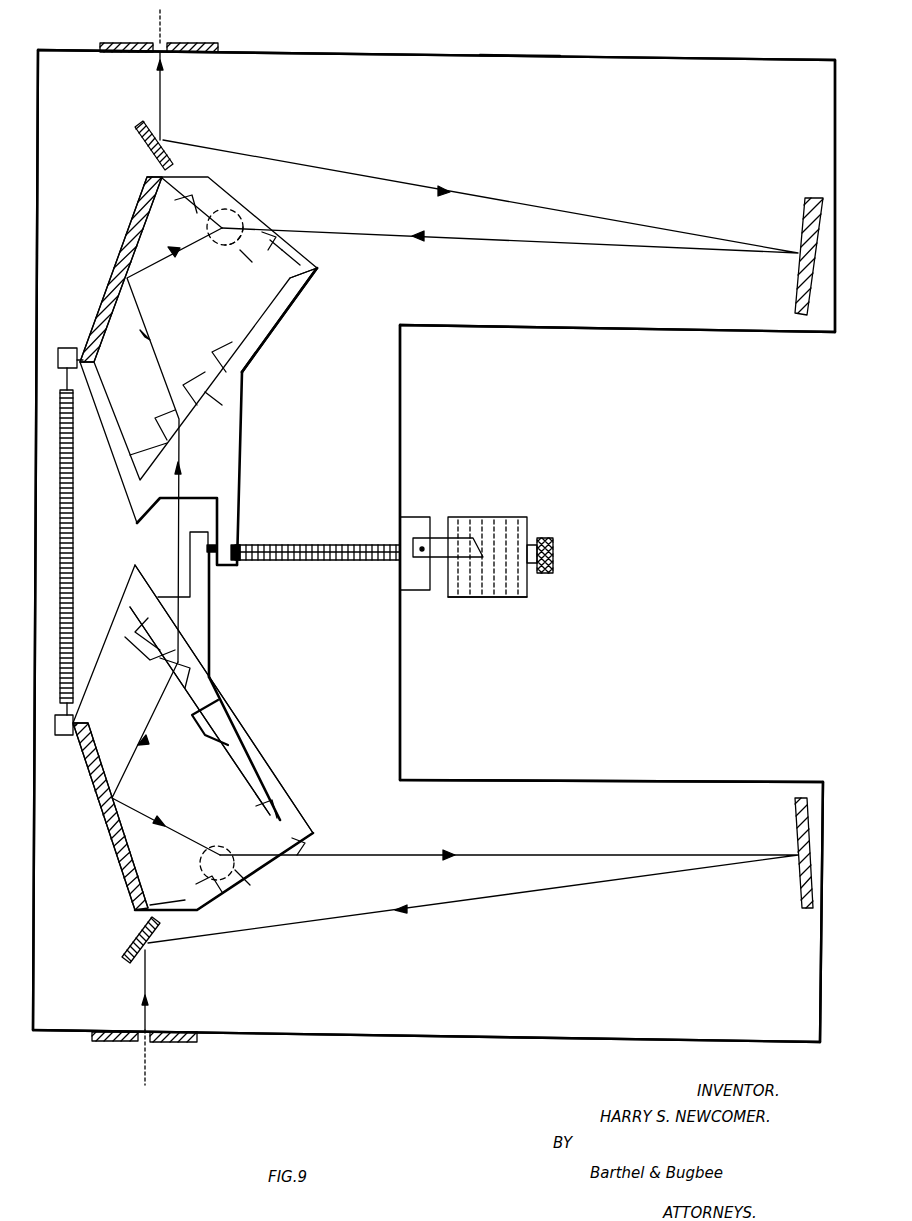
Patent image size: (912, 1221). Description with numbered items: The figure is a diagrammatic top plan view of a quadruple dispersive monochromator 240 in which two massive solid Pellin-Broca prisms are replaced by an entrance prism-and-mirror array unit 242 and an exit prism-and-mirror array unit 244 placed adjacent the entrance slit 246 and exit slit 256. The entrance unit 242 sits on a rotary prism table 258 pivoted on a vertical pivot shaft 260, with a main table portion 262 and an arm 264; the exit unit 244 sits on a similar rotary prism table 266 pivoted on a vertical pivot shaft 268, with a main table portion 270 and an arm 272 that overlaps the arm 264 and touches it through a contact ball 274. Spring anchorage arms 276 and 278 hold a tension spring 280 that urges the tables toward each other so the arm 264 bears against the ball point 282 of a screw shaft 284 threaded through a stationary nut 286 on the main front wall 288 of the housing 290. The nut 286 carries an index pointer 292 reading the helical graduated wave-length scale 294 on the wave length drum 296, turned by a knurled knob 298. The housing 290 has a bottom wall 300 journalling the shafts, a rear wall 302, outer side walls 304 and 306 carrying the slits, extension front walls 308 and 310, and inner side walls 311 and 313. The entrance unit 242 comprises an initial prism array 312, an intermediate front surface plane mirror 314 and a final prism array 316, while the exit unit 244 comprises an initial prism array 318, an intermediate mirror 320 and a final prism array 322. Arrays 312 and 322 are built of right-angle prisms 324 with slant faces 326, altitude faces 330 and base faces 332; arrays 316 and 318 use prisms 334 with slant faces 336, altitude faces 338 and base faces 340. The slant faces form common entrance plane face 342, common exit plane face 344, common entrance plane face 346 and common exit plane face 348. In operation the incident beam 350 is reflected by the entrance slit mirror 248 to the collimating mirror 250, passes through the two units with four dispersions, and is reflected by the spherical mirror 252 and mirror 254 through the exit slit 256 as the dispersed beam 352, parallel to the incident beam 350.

The quadruple dispersive monochromator 240 is at (203, 172).
The entrance prism-and-mirror array unit 242 is at (305, 282).
The exit prism-and-mirror array unit 244 is at (303, 818).
The entrance slit 246 is at (168, 45).
The entrance slit mirror 248 is at (137, 146).
The collimating mirror 250 is at (818, 198).
The spherical mirror 252 is at (796, 806).
The mirror 254 is at (128, 948).
The exit slit 256 is at (152, 1033).
The rotary prism table 258 is at (278, 344).
The vertical pivot shaft 260 is at (243, 215).
The main table portion 262 is at (285, 308).
The arm 264 is at (240, 510).
The rotary prism table 266 is at (266, 738).
The vertical pivot shaft 268 is at (252, 880).
The main table portion 270 is at (245, 716).
The arm 272 is at (211, 578).
The contact ball 274 is at (209, 545).
The spring anchorage arm 276 is at (67, 348).
The spring anchorage arm 278 is at (63, 735).
The tension spring 280 is at (73, 549).
The ball point 282 is at (240, 546).
The screw shaft 284 is at (355, 545).
The internally-threaded nut 286 is at (418, 518).
The main front wall 288 is at (400, 422).
The monochromator housing 290 is at (515, 56).
The index pointer 292 is at (440, 537).
The helical graduated wave-length scale 294 is at (495, 517).
The wave length drum 296 is at (528, 597).
The knurled knob 298 is at (553, 536).
The bottom wall 300 is at (400, 380).
The rear wall 302 is at (38, 218).
The outer side wall 304 is at (640, 58).
The outer side wall 306 is at (360, 1040).
The extension front wall 308 is at (835, 98).
The extension front wall 310 is at (824, 790).
The inner side wall 311 is at (660, 332).
The initial prism array 312 is at (290, 255).
The inner side wall 313 is at (645, 780).
The intermediate front surface plane mirror 314 is at (106, 330).
The final prism array 316 is at (250, 369).
The initial prism array 318 is at (212, 696).
The intermediate front surface plane mirror 320 is at (104, 842).
The final prism array 322 is at (215, 885).
The right-angle prism 324 is at (180, 207).
The slant face 326 is at (274, 240).
The altitude face 330 is at (225, 245).
The base face 332 is at (247, 264).
The right-angle prism 334 is at (218, 345).
The slant face 336 is at (220, 403).
The altitude face 338 is at (190, 378).
The base face 340 is at (158, 414).
The common entrance plane face 342 is at (305, 262).
The common exit plane face 344 is at (167, 443).
The common entrance plane face 346 is at (195, 690).
The common exit plane face 348 is at (172, 904).
The incident beam 350 is at (164, 97).
The dispersed beam 352 is at (136, 1080).